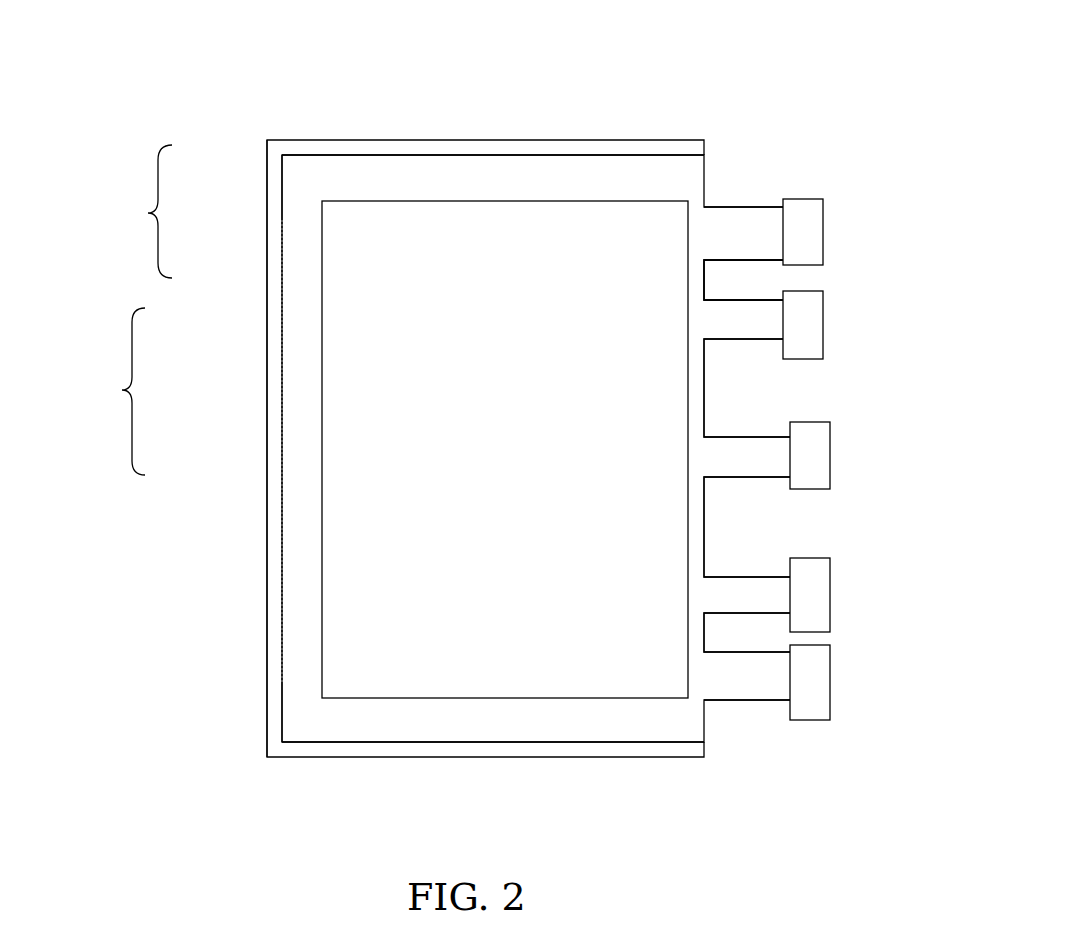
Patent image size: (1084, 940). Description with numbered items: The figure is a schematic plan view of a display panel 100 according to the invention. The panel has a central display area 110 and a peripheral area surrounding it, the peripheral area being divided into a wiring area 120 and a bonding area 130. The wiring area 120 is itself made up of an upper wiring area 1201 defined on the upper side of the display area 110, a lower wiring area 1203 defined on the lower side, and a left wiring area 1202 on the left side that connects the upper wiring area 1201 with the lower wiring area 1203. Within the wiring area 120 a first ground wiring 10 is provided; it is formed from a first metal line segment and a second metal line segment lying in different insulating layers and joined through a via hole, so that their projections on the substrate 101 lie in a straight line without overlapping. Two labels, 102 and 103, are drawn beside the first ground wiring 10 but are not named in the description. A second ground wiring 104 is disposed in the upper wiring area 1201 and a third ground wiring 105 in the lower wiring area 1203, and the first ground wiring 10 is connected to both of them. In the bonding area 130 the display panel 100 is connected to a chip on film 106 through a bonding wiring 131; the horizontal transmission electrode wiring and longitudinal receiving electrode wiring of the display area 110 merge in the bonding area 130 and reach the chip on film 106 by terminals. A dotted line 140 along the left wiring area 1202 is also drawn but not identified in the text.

The display panel 100 is at (464, 97).
The substrate 101 is at (683, 145).
The first edge 102 is at (282, 183).
The second edge 103 is at (282, 257).
The second ground wiring 104 is at (533, 155).
The third ground wiring 105 is at (437, 743).
The chip on film 106 is at (803, 225).
The display area 110 is at (664, 243).
The wiring area 120 is at (122, 390).
The upper wiring area 1201 is at (387, 183).
The left wiring area 1202 is at (302, 330).
The lower wiring area 1203 is at (342, 723).
The bonding area 130 is at (764, 222).
The bonding wiring 131 is at (763, 262).
The bending line 140 is at (282, 585).
The first ground wiring 10 is at (148, 213).